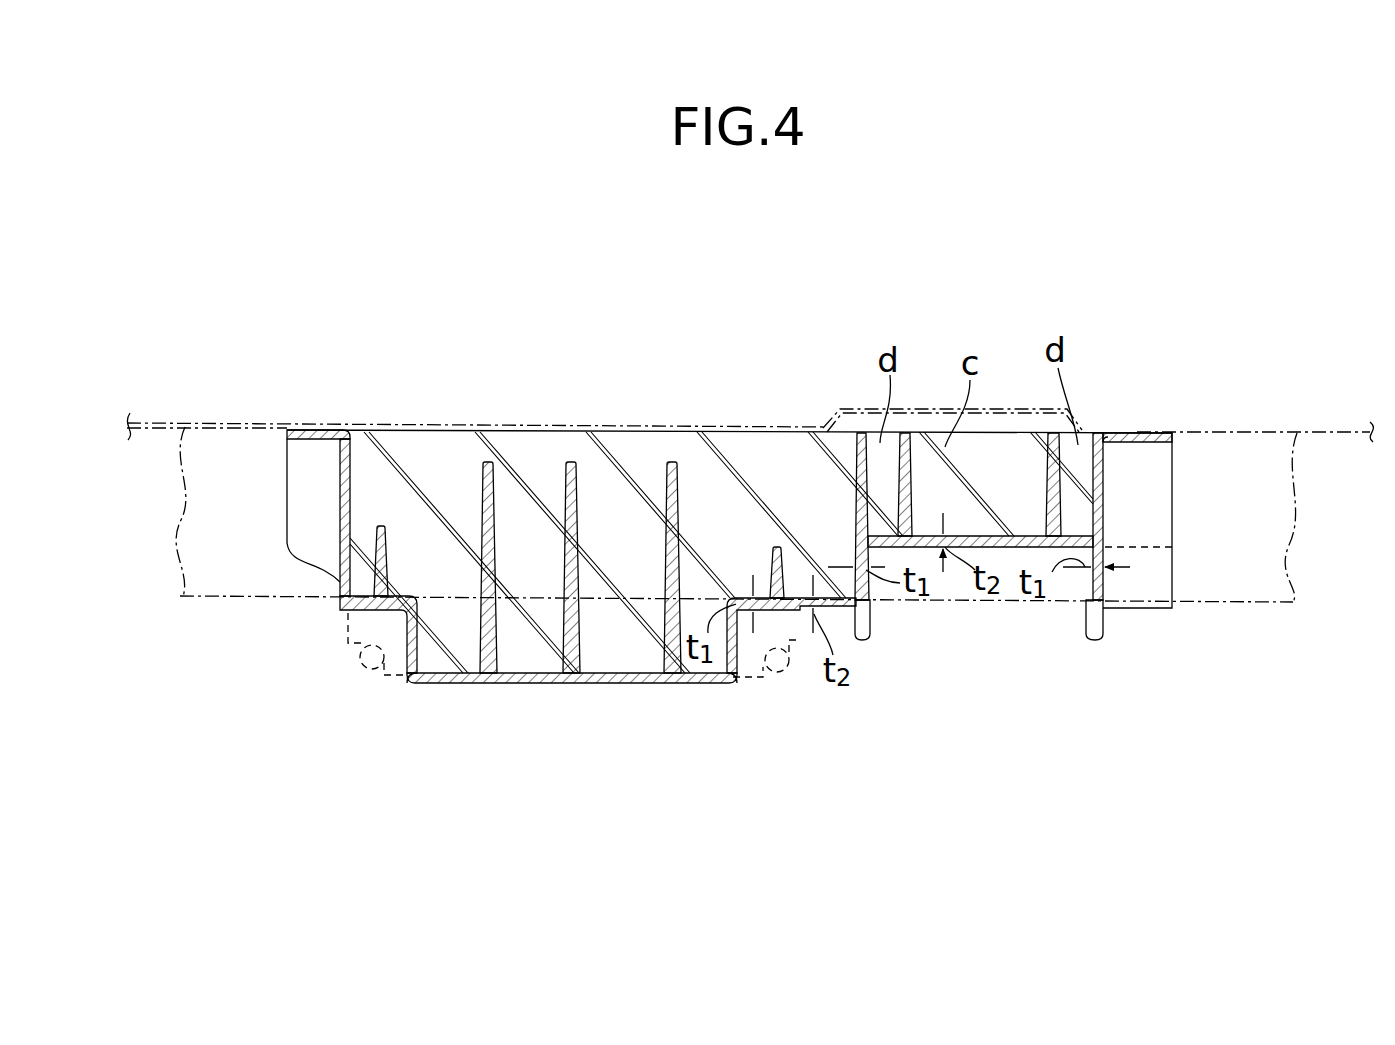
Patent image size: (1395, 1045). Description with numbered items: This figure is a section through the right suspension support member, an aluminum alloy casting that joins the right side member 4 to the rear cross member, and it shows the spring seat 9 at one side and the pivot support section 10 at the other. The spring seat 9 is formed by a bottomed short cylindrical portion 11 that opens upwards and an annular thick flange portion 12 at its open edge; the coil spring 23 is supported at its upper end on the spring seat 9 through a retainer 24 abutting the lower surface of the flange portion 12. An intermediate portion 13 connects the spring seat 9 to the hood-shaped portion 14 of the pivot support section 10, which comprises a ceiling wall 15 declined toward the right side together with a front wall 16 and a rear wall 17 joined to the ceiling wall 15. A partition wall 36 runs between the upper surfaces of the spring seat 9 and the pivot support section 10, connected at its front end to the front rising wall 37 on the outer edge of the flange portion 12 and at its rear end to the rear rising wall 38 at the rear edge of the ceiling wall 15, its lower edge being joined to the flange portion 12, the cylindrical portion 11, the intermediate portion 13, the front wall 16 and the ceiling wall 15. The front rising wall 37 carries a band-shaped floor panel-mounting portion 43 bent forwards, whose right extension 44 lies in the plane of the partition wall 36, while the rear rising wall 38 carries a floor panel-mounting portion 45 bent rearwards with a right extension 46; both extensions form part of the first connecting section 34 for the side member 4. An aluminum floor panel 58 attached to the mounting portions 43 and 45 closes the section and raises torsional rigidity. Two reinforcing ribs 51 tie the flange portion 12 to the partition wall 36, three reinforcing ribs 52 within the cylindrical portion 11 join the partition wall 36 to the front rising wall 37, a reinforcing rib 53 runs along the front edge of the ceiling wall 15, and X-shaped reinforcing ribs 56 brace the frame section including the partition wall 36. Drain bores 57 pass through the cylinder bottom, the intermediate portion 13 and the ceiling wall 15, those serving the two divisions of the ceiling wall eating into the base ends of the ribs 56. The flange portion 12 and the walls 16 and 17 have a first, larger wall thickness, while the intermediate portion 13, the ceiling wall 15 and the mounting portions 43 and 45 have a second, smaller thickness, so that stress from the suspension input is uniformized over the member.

The right side member 4 is at (178, 520).
The spring seat 9 is at (638, 688).
The pivot support section 10 is at (968, 592).
The bottomed short cylindrical portion 11 is at (533, 683).
The flange portion 12 is at (373, 613).
The intermediate portion 13 is at (830, 597).
The hood-shaped portion 14 is at (993, 531).
The ceiling wall 15 is at (1007, 599).
The front wall 16 is at (878, 608).
The rear wall 17 is at (1097, 587).
The coil spring 23 is at (363, 665).
The retainer 24 is at (396, 675).
The first connecting section 34 is at (701, 589).
The partition wall 36 is at (538, 446).
The front rising wall 37 is at (350, 490).
The rear rising wall 38 is at (1105, 483).
The floor panel-mounting portion 43 is at (313, 429).
The right extension 44 is at (305, 493).
The floor panel-mounting portion 45 is at (1145, 435).
The right extension 46 is at (1157, 517).
The reinforcing rib 51 is at (387, 557).
The reinforcing rib 52 is at (490, 580).
The reinforcing rib 53 is at (857, 447).
The X-shaped reinforcing rib 56 is at (1093, 457).
The drain bore 57 is at (920, 537).
The floor panel 58 is at (1343, 431).